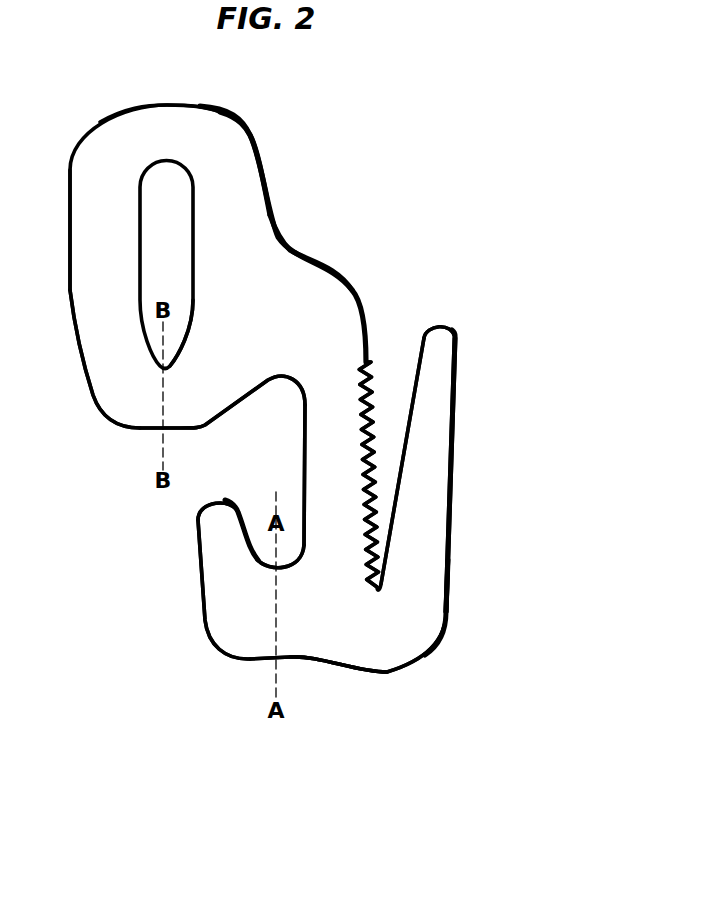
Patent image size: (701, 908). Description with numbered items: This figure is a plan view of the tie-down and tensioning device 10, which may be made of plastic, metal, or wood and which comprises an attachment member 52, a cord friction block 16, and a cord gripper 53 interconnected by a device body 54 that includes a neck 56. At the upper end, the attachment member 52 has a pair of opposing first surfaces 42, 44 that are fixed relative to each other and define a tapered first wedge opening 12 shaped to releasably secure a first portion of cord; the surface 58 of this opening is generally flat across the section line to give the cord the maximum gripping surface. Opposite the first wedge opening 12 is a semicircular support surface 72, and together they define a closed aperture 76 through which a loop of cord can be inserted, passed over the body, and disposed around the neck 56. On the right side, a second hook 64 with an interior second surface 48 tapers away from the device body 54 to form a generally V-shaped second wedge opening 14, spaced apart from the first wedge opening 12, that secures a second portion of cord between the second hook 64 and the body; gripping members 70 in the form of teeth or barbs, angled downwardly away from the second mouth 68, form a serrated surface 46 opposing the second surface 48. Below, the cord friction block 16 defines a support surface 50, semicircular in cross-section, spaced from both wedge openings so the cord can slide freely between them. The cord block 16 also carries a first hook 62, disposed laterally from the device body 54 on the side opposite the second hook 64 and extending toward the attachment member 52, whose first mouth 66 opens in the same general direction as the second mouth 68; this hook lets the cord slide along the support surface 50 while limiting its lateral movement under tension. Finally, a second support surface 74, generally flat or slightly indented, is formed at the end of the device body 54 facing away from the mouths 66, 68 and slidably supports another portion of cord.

The tie-down and tensioning device 10 is at (460, 190).
The first wedge opening 12 is at (158, 352).
The second wedge opening 14 is at (383, 526).
The cord friction block 16 is at (237, 605).
The first surface 42 is at (138, 332).
The first surface 44 is at (185, 340).
The serrated surface 46 is at (360, 443).
The second surface 48 is at (413, 417).
The support surface 50 is at (263, 557).
The attachment member 52 is at (228, 180).
The cord gripper 53 is at (423, 575).
The device body 54 is at (347, 547).
The neck 56 is at (315, 293).
The surface of wedge opening 58 is at (170, 368).
The first hook 62 is at (212, 507).
The second hook 64 is at (458, 338).
The first mouth 66 is at (270, 484).
The second mouth 68 is at (416, 323).
The gripping members 70 is at (384, 374).
The support surface 72 is at (163, 170).
The second support surface 74 is at (307, 662).
The closed aperture 76 is at (153, 208).